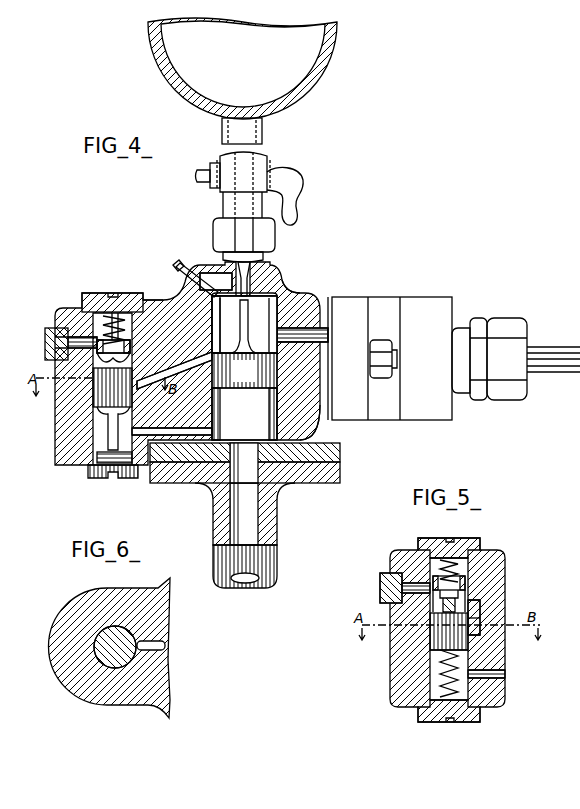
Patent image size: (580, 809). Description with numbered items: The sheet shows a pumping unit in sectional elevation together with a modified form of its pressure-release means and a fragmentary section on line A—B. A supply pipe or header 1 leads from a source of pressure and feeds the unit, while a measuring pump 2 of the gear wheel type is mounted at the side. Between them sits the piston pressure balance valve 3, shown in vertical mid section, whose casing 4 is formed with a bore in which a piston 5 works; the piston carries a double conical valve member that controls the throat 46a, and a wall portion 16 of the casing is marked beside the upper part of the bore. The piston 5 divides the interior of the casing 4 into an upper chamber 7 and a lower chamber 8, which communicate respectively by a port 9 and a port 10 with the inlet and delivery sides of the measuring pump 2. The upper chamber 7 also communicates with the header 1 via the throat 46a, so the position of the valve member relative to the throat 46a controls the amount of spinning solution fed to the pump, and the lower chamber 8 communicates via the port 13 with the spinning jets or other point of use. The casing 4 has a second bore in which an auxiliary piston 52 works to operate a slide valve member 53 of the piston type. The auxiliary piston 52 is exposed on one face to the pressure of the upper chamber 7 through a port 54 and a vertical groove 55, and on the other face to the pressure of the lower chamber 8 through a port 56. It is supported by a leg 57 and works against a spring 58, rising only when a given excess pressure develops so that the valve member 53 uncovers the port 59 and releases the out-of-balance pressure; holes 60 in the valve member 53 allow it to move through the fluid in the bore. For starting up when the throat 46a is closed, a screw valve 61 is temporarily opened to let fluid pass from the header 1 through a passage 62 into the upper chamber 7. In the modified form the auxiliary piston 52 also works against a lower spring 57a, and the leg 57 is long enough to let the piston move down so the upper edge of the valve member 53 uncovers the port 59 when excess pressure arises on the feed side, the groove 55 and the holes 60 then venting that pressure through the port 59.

In FIG. 4, the supply pipe or header 1 is at (296, 62).
In FIG. 4, the measuring pump 2 is at (410, 312).
In FIG. 4, the piston pressure balance valve 3 is at (262, 302).
In FIG. 4, the casing 4 is at (292, 302).
In FIG. 5, the casing 4 is at (488, 567).
In FIG. 4, the piston 5 is at (244, 370).
In FIG. 4, the upper chamber 7 is at (244, 324).
In FIG. 4, the lower chamber 8 is at (244, 414).
In FIG. 4, the port 9 is at (310, 328).
In FIG. 4, the port 10 is at (325, 417).
In FIG. 4, the port 13 is at (248, 510).
In FIG. 4, the chamber wall 16 is at (212, 312).
In FIG. 4, the throat 46a is at (245, 292).
In FIG. 4, the auxiliary piston 52 is at (110, 393).
In FIG. 5, the auxiliary piston 52 is at (446, 630).
In FIG. 6, the auxiliary piston 52 is at (110, 655).
In FIG. 4, the slide valve member 53 is at (107, 370).
In FIG. 5, the slide valve member 53 is at (430, 582).
In FIG. 4, the port 54 is at (178, 368).
In FIG. 5, the port 54 is at (470, 626).
In FIG. 6, the port 54 is at (152, 645).
In FIG. 4, the vertical groove 55 is at (143, 318).
In FIG. 5, the vertical groove 55 is at (472, 600).
In FIG. 6, the vertical groove 55 is at (138, 650).
In FIG. 4, the port 56 is at (177, 434).
In FIG. 5, the port 56 is at (490, 674).
In FIG. 4, the leg or support 57 is at (110, 432).
In FIG. 5, the leg or support 57 is at (440, 685).
In FIG. 5, the lower spring 57a is at (440, 690).
In FIG. 4, the spring 58 is at (102, 296).
In FIG. 5, the spring 58 is at (452, 567).
In FIG. 4, the port 59 is at (52, 328).
In FIG. 5, the port 59 is at (380, 589).
In FIG. 4, the holes 60 is at (110, 362).
In FIG. 4, the screw valve 61 is at (193, 268).
In FIG. 4, the passage 62 is at (250, 268).